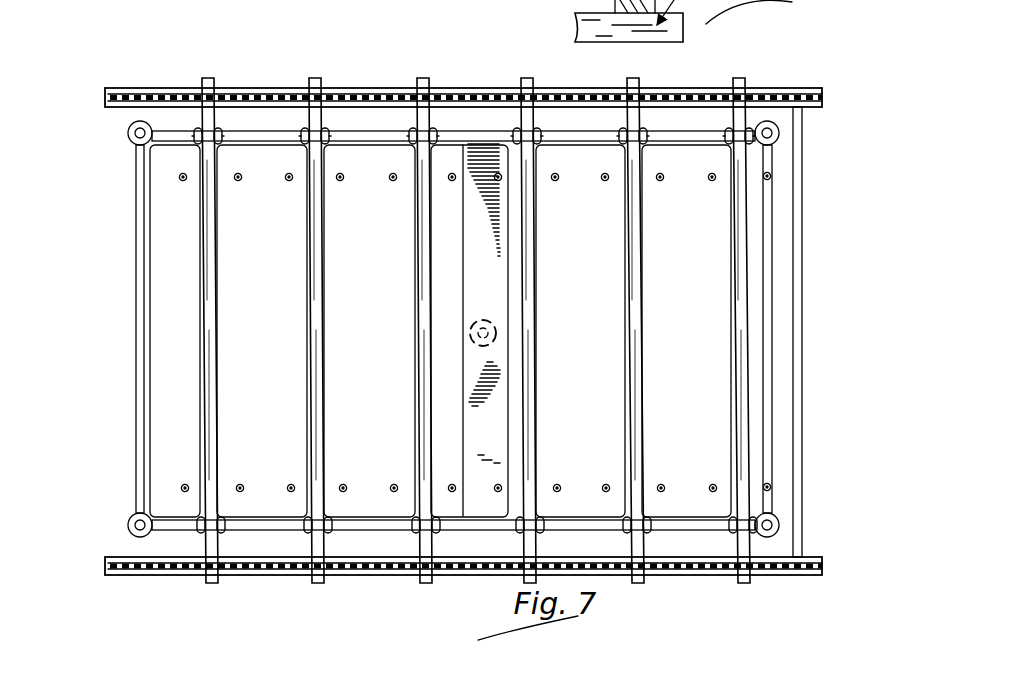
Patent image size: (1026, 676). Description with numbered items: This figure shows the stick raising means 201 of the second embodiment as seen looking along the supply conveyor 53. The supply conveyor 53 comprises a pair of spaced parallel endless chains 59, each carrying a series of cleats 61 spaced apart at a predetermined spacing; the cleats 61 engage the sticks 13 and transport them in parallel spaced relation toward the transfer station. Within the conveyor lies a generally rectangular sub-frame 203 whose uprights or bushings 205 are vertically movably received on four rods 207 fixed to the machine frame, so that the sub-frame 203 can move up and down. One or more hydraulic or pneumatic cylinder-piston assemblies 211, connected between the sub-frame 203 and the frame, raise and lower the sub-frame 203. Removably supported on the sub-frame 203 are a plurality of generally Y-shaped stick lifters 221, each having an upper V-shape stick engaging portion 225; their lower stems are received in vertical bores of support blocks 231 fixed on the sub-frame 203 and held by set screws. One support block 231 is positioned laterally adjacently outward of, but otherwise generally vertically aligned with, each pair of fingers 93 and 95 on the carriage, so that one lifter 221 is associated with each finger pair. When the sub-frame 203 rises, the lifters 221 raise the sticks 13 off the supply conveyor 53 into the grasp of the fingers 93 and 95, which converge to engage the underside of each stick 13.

The stick 13 is at (315, 332).
The supply conveyor 53 is at (158, 585).
The chain 59 is at (138, 88).
The cleat 61 is at (303, 88).
The finger 93 is at (183, 182).
The finger 95 is at (238, 182).
The stick raising means 201 is at (175, 86).
The sub-frame 203 is at (136, 256).
The bushing 205 is at (150, 139).
The rod 207 is at (128, 131).
The cylinder-piston assembly 211 is at (498, 332).
The stick lifter 221 is at (331, 125).
The V-shape stick engaging portion 225 is at (412, 130).
The support block 231 is at (241, 92).